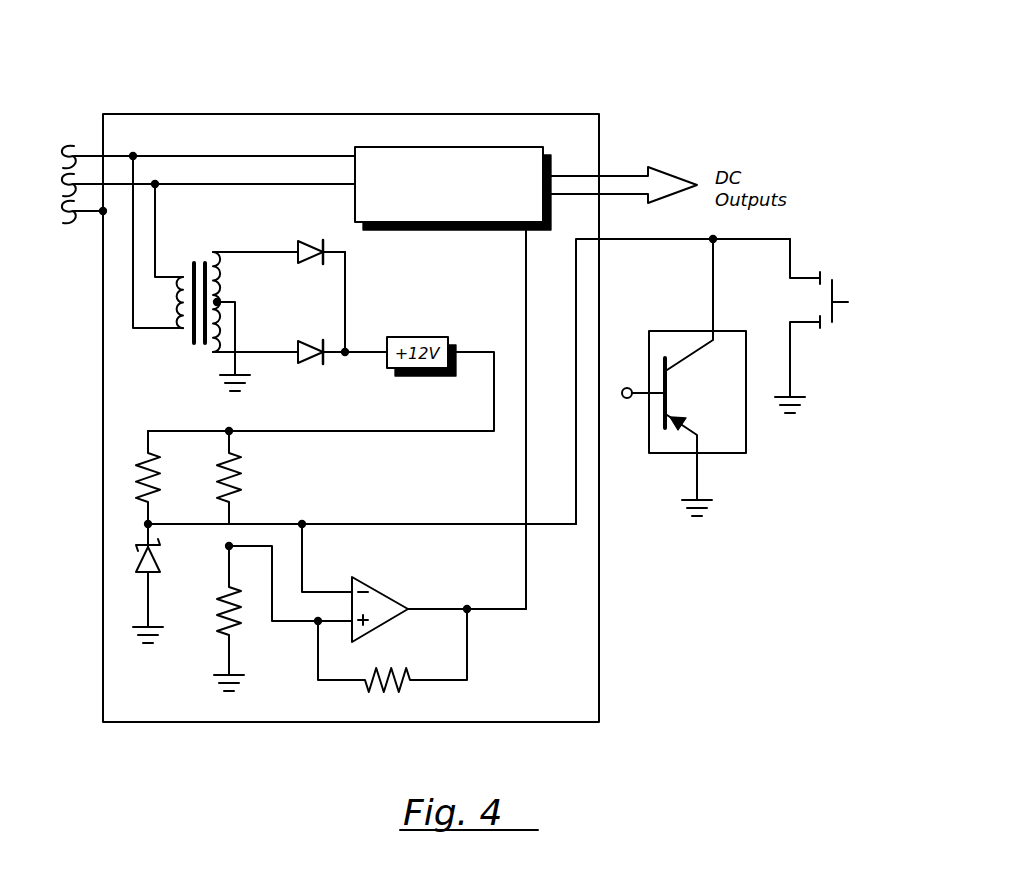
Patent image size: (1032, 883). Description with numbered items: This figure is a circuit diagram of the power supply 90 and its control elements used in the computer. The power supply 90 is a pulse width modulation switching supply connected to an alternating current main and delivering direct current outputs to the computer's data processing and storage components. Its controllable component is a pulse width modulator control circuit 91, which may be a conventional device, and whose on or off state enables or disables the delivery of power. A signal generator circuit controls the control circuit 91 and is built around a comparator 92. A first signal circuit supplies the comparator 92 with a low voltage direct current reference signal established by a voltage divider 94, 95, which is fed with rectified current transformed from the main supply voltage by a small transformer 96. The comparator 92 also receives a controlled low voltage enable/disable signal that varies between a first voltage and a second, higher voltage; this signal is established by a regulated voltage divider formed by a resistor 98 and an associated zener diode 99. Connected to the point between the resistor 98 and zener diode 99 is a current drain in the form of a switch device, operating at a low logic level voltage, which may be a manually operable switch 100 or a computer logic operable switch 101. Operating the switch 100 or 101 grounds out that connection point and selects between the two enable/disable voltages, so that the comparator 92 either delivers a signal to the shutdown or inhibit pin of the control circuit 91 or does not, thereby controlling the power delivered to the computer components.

The power supply 90 is at (324, 114).
The pulse width modulator control circuit 91 is at (493, 147).
The comparator 92 is at (378, 580).
The voltage divider 94 is at (246, 479).
The voltage divider 95 is at (245, 619).
The transformer 96 is at (203, 250).
The resistor 98 is at (127, 470).
The zener diode 99 is at (136, 563).
The manually operable switch 100 is at (807, 330).
The computer logic operable switch 101 is at (730, 454).